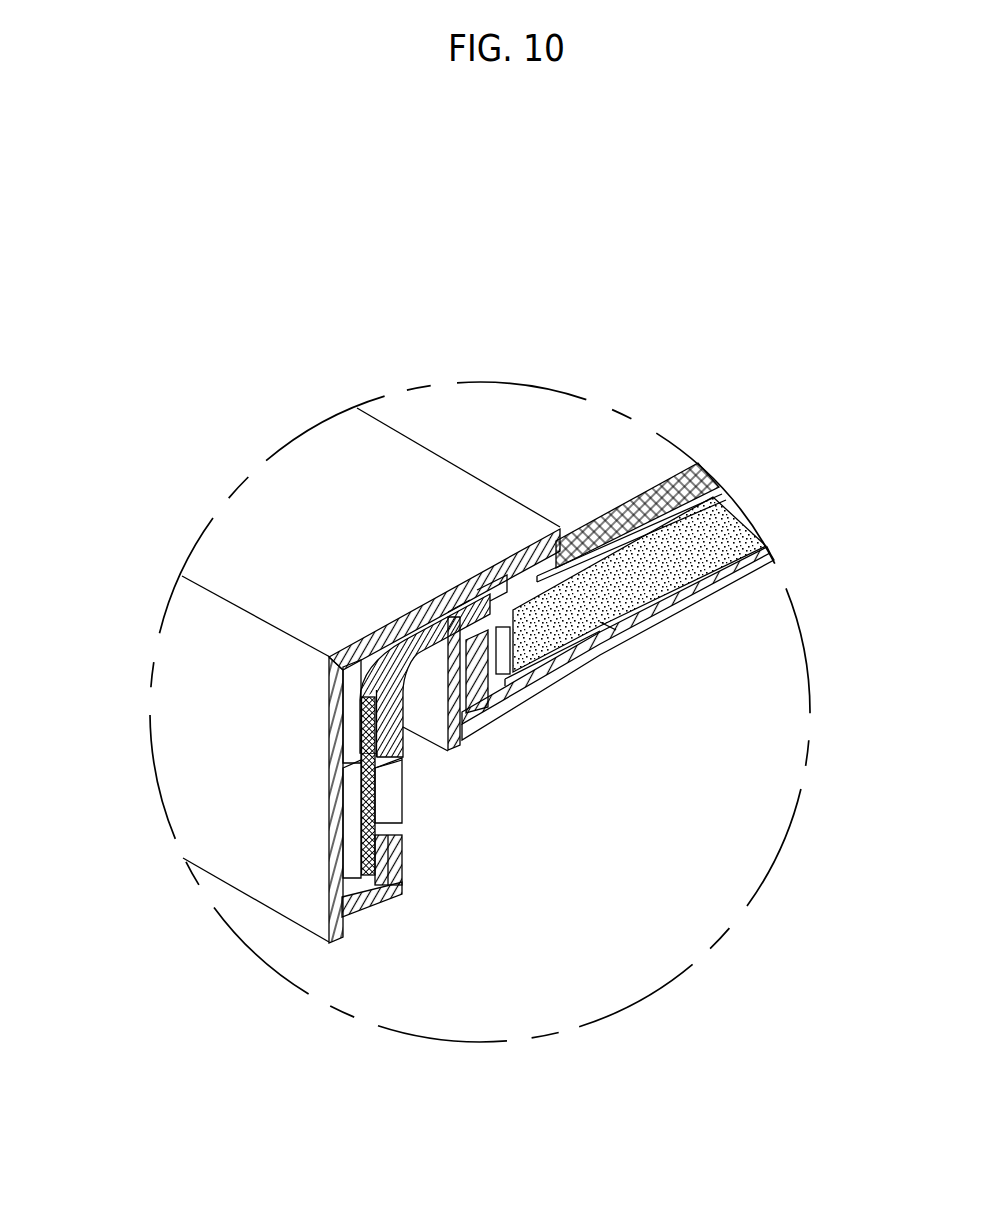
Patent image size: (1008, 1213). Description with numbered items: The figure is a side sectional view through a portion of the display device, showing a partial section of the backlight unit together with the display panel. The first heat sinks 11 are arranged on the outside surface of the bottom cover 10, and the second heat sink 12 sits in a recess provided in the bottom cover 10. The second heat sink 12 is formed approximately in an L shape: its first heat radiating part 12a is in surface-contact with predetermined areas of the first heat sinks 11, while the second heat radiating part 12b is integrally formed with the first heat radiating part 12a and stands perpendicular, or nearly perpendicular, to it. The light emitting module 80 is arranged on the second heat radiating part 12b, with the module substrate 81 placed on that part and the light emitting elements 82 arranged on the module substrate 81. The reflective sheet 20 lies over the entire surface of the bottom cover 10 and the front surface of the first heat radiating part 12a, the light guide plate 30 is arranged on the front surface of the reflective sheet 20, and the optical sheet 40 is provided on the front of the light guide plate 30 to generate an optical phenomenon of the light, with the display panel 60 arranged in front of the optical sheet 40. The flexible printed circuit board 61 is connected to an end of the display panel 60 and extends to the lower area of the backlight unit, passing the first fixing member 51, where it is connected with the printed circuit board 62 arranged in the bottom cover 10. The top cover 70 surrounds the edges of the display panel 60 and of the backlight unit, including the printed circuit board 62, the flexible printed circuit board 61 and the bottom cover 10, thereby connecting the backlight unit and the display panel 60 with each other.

The bottom cover 10 is at (707, 593).
The first heat sink 11 is at (607, 627).
The second heat sink 12 is at (507, 742).
The first heat radiating part 12a is at (520, 690).
The second heat radiating part 12b is at (462, 727).
The reflective sheet 20 is at (768, 550).
The light guide plate 30 is at (750, 510).
The optical sheet 40 is at (722, 488).
The first fixing member 51 is at (413, 640).
The display panel 60 is at (673, 477).
The flexible printed circuit board 61 is at (352, 712).
The printed circuit board 62 is at (353, 825).
The top cover 70 is at (190, 788).
The light emitting module 80 is at (481, 438).
The module substrate 81 is at (463, 630).
The light emitting element 82 is at (486, 630).